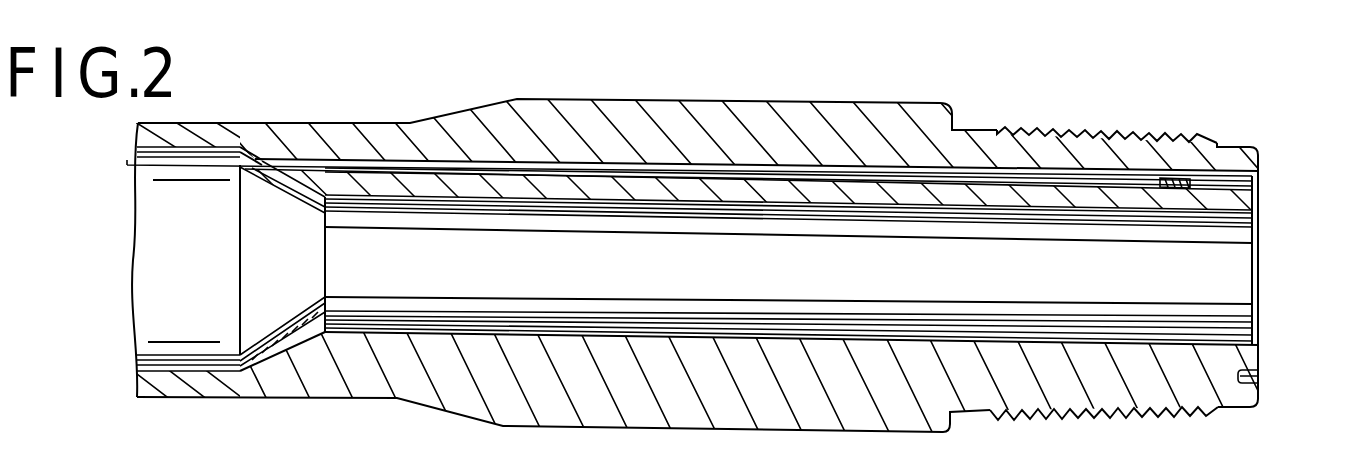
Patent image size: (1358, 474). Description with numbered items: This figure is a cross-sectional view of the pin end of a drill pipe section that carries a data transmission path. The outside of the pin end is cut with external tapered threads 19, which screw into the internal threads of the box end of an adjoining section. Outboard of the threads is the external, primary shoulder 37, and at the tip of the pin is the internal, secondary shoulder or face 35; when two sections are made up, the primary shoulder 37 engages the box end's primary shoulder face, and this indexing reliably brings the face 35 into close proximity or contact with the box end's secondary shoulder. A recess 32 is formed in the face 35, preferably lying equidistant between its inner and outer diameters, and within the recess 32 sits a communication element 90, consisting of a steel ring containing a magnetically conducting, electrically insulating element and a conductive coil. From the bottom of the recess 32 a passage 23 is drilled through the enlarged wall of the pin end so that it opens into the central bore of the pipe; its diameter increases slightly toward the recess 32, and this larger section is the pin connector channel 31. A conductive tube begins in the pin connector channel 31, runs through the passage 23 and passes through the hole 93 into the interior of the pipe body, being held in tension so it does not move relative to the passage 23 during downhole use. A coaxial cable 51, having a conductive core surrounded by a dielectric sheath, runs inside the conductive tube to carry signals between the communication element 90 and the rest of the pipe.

The external tapered threads 19 is at (1047, 135).
The pin end passage 23 is at (592, 165).
The pin connector channel 31 is at (1180, 177).
The recess 32 is at (1258, 187).
The internal secondary shoulder or face 35 is at (1258, 155).
The external primary shoulder 37 is at (952, 125).
The coaxial cable 51 is at (742, 168).
The communication element 90 is at (1253, 373).
The hole 93 is at (268, 158).